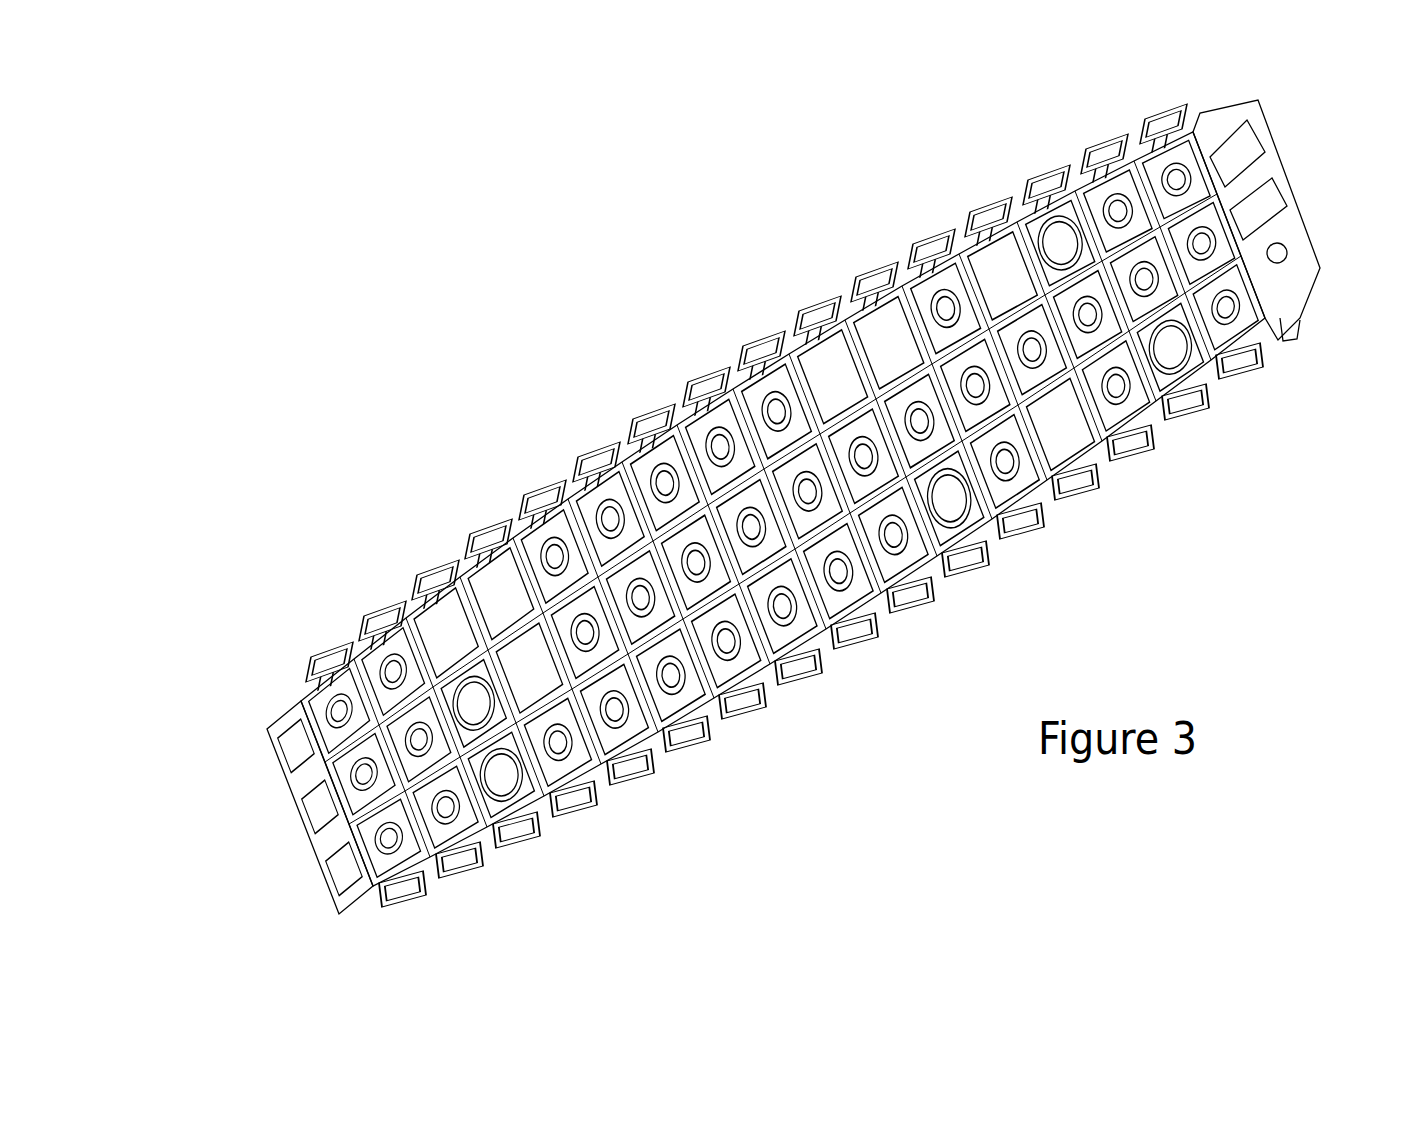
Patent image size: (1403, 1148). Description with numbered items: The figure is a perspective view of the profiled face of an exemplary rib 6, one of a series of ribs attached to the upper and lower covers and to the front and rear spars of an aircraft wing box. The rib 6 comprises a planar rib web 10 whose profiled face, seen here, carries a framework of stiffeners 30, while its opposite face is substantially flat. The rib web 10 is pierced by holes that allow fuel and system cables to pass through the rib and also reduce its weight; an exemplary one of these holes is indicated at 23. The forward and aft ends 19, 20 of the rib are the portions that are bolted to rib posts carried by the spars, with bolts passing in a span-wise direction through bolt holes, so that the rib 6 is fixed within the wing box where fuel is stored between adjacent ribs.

The rib 6 is at (769, 507).
The rib web 10 is at (835, 380).
The forward end 19 is at (295, 808).
The aft end 20 is at (1283, 200).
The hole 23 is at (1068, 245).
The stiffeners 30 is at (333, 760).